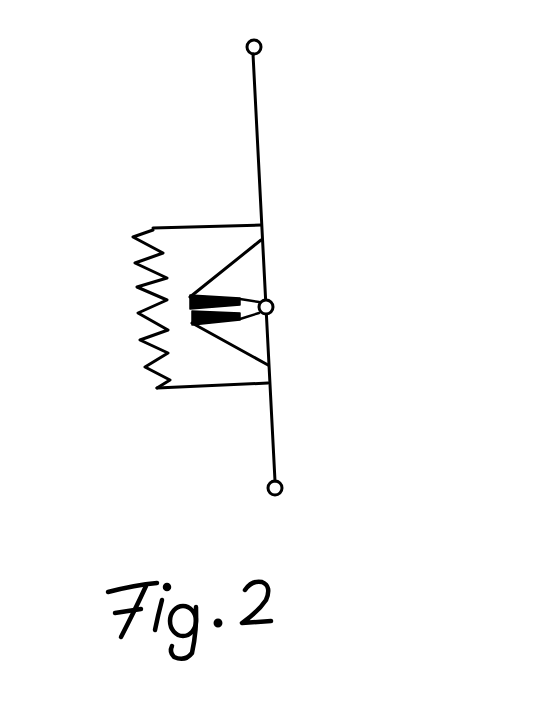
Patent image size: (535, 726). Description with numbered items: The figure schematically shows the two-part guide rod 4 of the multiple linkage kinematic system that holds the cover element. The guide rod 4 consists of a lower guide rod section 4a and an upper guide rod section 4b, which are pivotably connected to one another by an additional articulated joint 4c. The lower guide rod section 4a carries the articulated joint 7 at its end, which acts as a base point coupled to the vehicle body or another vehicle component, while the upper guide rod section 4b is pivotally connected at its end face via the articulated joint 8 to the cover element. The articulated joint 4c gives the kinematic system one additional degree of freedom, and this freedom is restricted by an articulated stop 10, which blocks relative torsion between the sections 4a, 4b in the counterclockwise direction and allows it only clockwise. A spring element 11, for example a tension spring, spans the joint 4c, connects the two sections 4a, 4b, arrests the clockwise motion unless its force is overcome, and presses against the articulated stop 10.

The guide rod 4 is at (200, 151).
The lower guide rod section 4a is at (273, 434).
The upper guide rod section 4b is at (256, 128).
The articulated joint 4c is at (273, 306).
The articulated joint 7 is at (281, 494).
The articulated joint 8 is at (260, 43).
The articulated stop 10 is at (213, 352).
The spring element 11 is at (140, 317).